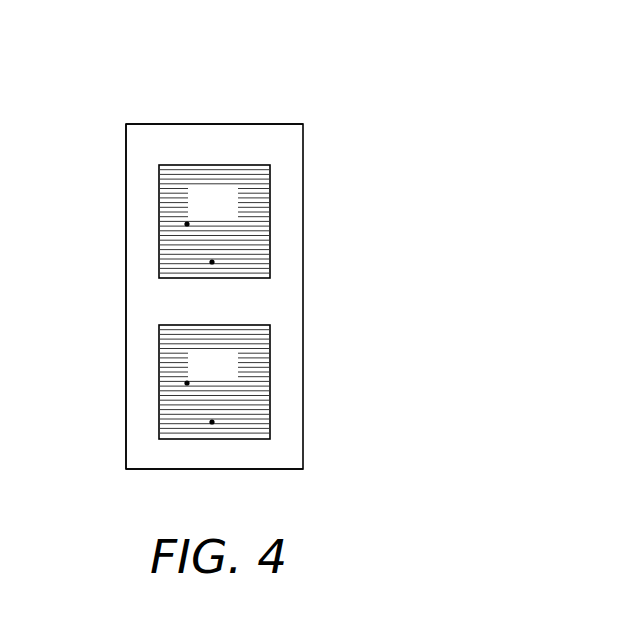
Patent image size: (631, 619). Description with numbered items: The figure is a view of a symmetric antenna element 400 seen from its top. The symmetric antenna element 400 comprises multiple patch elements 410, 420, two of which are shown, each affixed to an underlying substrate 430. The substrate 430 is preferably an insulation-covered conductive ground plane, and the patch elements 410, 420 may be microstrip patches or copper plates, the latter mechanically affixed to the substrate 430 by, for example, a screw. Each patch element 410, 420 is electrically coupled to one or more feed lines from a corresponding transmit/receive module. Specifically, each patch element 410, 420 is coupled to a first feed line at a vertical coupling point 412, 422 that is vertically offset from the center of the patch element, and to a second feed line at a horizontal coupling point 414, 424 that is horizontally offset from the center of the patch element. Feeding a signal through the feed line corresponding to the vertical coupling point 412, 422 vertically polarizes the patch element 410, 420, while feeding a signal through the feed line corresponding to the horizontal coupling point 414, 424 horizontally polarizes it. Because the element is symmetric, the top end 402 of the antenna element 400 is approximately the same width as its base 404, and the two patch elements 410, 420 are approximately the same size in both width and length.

The symmetric antenna element 400 is at (70, 33).
The top end 402 is at (270, 124).
The base 404 is at (268, 469).
The patch element 410 is at (235, 216).
The vertical coupling point 412 is at (212, 262).
The horizontal coupling point 414 is at (187, 224).
The patch element 420 is at (235, 377).
The vertical coupling point 422 is at (212, 422).
The horizontal coupling point 424 is at (187, 383).
The substrate 430 is at (235, 157).